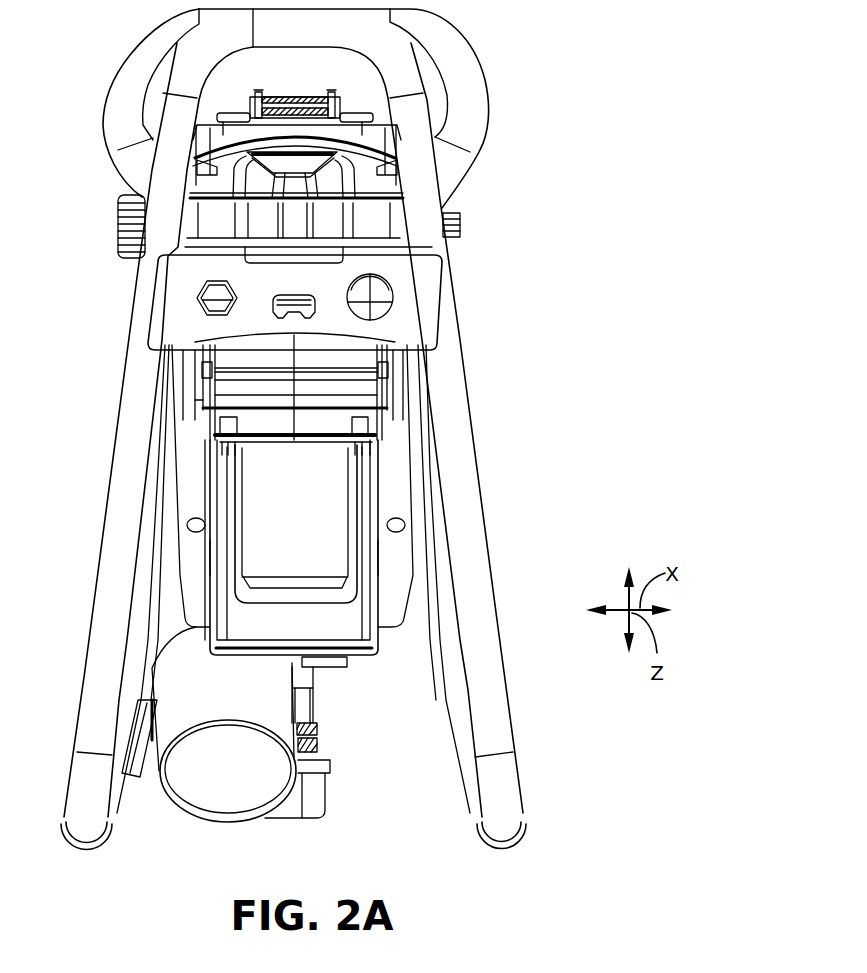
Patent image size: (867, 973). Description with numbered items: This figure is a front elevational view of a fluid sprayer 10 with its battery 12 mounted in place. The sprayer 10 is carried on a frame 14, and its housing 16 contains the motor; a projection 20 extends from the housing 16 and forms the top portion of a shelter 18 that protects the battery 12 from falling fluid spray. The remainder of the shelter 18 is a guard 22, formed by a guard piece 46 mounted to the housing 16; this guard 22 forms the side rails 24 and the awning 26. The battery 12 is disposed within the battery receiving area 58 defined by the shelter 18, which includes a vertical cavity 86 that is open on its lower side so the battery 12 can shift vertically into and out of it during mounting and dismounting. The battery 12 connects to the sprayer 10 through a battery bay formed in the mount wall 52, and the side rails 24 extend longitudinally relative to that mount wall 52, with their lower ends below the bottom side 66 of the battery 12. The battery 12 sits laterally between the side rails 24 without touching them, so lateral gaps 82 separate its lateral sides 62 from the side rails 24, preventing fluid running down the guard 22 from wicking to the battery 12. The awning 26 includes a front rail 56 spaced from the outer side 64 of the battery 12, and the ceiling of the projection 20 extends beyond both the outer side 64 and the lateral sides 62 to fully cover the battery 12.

The fluid sprayer 10 is at (518, 223).
The battery 12 is at (325, 616).
The frame 14 is at (516, 737).
The housing 16 is at (418, 393).
The shelter 18 is at (365, 545).
The projection 20 is at (363, 370).
The guard 22 is at (383, 428).
The side rails 24 is at (200, 532).
The awning 26 is at (337, 420).
The guard piece 46 is at (190, 402).
The mount wall 52 is at (360, 477).
The front rail 56 is at (248, 425).
The battery receiving area 58 is at (224, 616).
The lateral sides 62 is at (240, 505).
The outer side 64 is at (297, 565).
The bottom side 66 is at (268, 603).
The lateral gaps 82 is at (206, 560).
The vertical cavity 86 is at (208, 478).